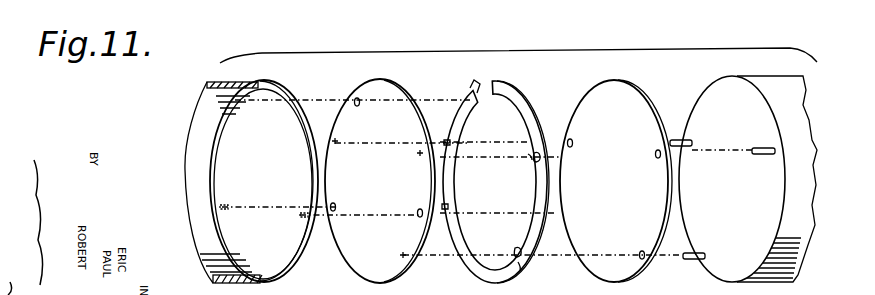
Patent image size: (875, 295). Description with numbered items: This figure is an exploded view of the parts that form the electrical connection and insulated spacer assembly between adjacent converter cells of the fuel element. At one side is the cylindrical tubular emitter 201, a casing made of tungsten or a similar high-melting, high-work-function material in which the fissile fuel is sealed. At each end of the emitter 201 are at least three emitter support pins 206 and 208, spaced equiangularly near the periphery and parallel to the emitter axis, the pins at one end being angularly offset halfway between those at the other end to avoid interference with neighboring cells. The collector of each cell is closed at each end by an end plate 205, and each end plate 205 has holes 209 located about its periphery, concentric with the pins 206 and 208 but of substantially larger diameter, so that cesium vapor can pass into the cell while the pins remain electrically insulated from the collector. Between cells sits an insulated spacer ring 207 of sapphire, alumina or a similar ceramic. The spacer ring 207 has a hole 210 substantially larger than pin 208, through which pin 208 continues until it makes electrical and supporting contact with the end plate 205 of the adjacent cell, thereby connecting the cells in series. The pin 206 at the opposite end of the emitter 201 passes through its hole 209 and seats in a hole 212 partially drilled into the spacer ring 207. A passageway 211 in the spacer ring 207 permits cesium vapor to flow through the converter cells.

The emitter 201 is at (807, 173).
The end plate 205 is at (378, 80).
The emitter support pin 206 is at (272, 90).
The insulated spacer ring 207 is at (476, 281).
The support pin 208 is at (752, 150).
The hole 209 is at (418, 213).
The hole 210 is at (530, 158).
The passageway 211 is at (534, 154).
The hole 212 is at (448, 205).